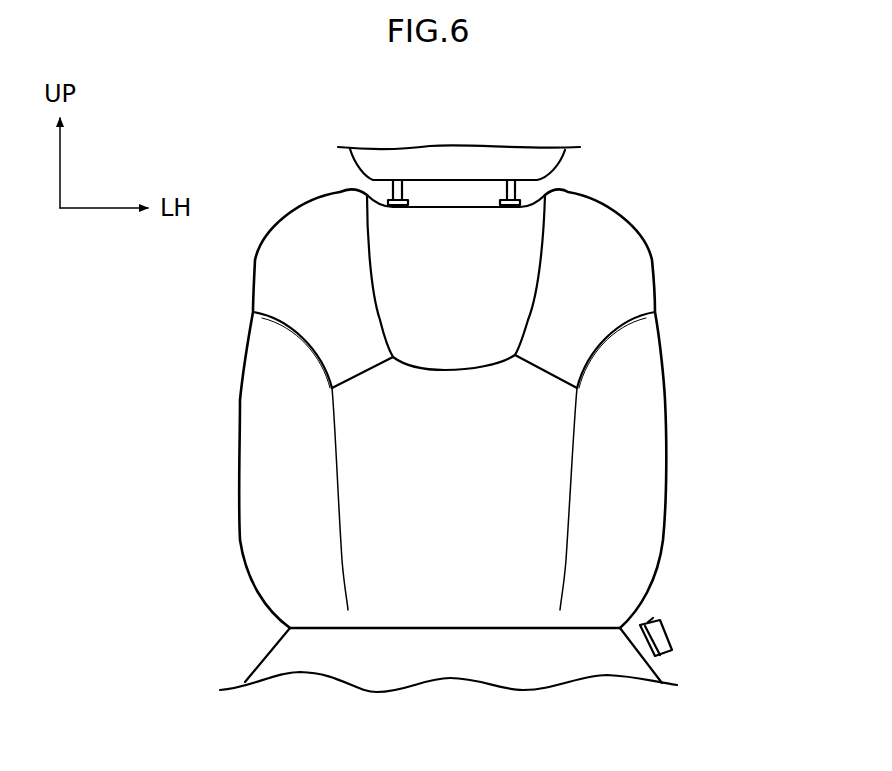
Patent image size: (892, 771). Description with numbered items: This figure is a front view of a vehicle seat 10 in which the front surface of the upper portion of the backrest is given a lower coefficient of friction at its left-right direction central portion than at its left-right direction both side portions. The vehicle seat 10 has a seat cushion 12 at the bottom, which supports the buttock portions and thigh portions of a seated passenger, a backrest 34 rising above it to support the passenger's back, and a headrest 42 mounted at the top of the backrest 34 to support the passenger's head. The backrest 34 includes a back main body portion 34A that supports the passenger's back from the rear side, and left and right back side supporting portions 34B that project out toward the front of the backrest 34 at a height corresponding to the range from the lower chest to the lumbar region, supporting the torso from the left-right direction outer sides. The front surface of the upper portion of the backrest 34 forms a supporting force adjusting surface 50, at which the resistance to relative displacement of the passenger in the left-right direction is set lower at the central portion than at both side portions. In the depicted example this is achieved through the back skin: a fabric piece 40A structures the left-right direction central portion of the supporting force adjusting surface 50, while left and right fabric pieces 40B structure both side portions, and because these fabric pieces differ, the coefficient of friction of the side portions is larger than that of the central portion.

The vehicle seat 10 is at (683, 290).
The seat cushion 12 is at (257, 662).
The backrest 34 is at (668, 410).
The back main body portion 34A is at (437, 590).
The back side supporting portions 34B is at (268, 493).
The fabric piece 40A is at (472, 243).
The fabric pieces 40B is at (323, 227).
The headrest 42 is at (430, 153).
The supporting force adjusting surface 50 is at (452, 322).